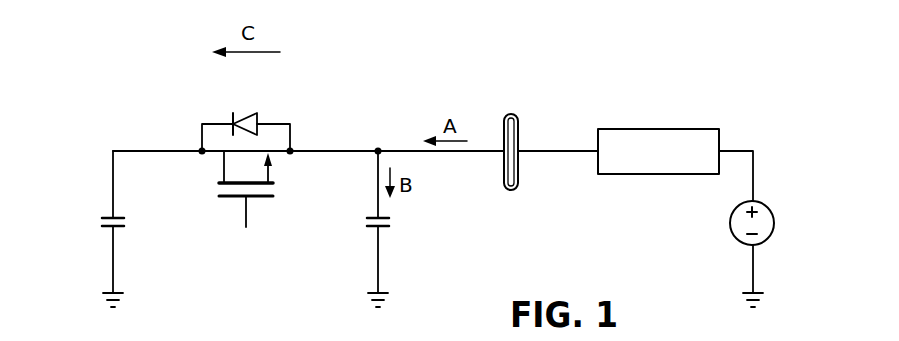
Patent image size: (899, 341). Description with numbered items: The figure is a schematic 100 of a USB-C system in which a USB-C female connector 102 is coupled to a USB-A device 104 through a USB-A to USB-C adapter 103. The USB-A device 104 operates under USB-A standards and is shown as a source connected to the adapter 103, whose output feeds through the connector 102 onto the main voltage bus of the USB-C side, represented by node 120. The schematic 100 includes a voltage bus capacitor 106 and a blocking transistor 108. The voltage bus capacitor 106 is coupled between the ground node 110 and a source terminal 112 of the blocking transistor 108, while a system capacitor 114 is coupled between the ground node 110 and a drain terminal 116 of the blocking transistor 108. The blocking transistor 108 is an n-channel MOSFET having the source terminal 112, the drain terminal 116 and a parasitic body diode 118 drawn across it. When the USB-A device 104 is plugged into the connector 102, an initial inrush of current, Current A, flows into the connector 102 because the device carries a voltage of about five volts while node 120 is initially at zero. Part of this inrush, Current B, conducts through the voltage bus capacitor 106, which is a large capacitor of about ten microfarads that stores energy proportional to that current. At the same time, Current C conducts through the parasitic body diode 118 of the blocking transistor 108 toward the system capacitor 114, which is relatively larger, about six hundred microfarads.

The schematic 100 is at (545, 68).
The USB-C female connector 102 is at (518, 130).
The USB-A to USB-C adapter 103 is at (658, 128).
The USB-A device 104 is at (774, 223).
The voltage bus capacitor 106 is at (390, 222).
The blocking transistor 108 is at (248, 217).
The ground node 110 is at (102, 297).
The source terminal 112 is at (272, 180).
The system capacitor 114 is at (103, 222).
The drain terminal 116 is at (222, 170).
The parasitic body diode 118 is at (247, 113).
The node 120 is at (377, 146).